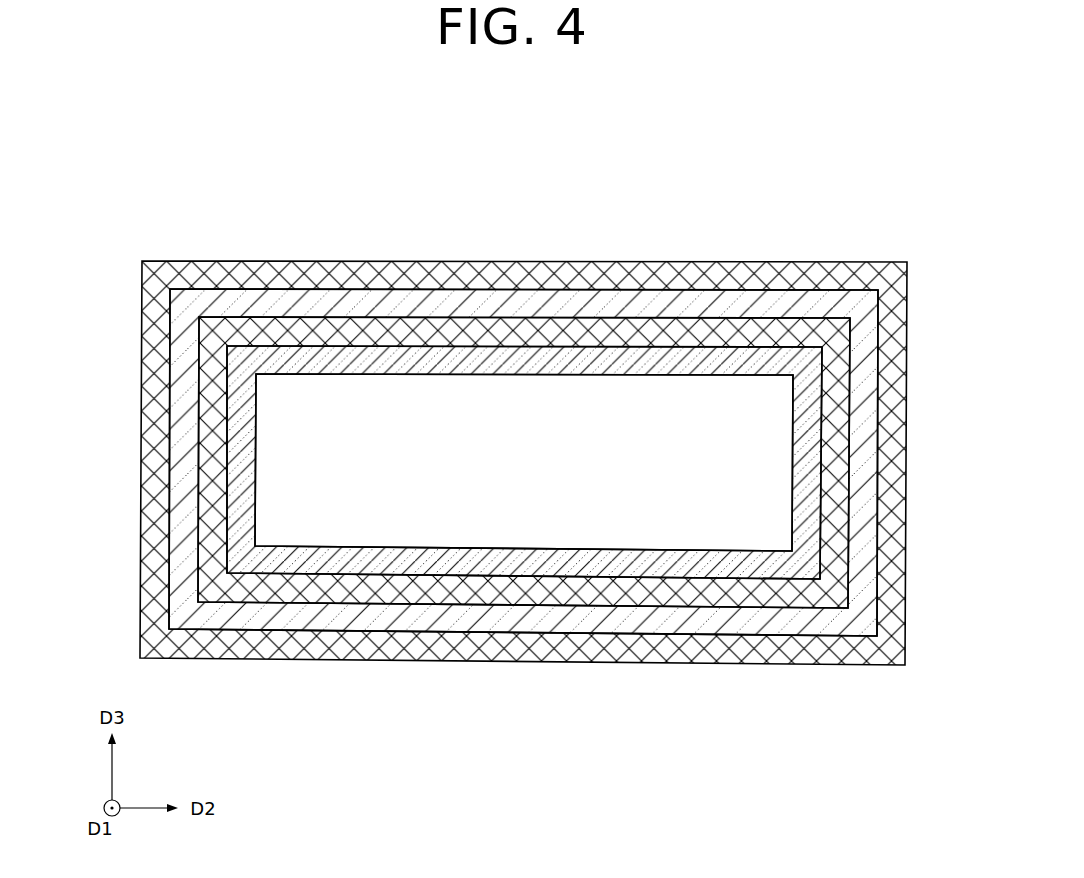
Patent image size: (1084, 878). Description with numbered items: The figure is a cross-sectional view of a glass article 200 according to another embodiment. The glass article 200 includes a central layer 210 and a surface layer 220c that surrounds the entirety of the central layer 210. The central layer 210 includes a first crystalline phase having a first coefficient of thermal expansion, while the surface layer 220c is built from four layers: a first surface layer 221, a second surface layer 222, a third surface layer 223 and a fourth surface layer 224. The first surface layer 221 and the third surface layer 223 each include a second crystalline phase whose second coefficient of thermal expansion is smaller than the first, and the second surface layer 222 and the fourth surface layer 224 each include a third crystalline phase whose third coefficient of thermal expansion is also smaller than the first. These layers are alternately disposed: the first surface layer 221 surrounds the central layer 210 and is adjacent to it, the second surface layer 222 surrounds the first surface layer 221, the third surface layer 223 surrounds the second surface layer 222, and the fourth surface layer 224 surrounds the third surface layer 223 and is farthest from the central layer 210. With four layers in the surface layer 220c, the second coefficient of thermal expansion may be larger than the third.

The glass article 200 is at (155, 221).
The central layer 210 is at (308, 398).
The surface layer 220c is at (413, 201).
The first surface layer 221 is at (663, 361).
The second surface layer 222 is at (586, 331).
The third surface layer 223 is at (513, 301).
The fourth surface layer 224 is at (430, 297).